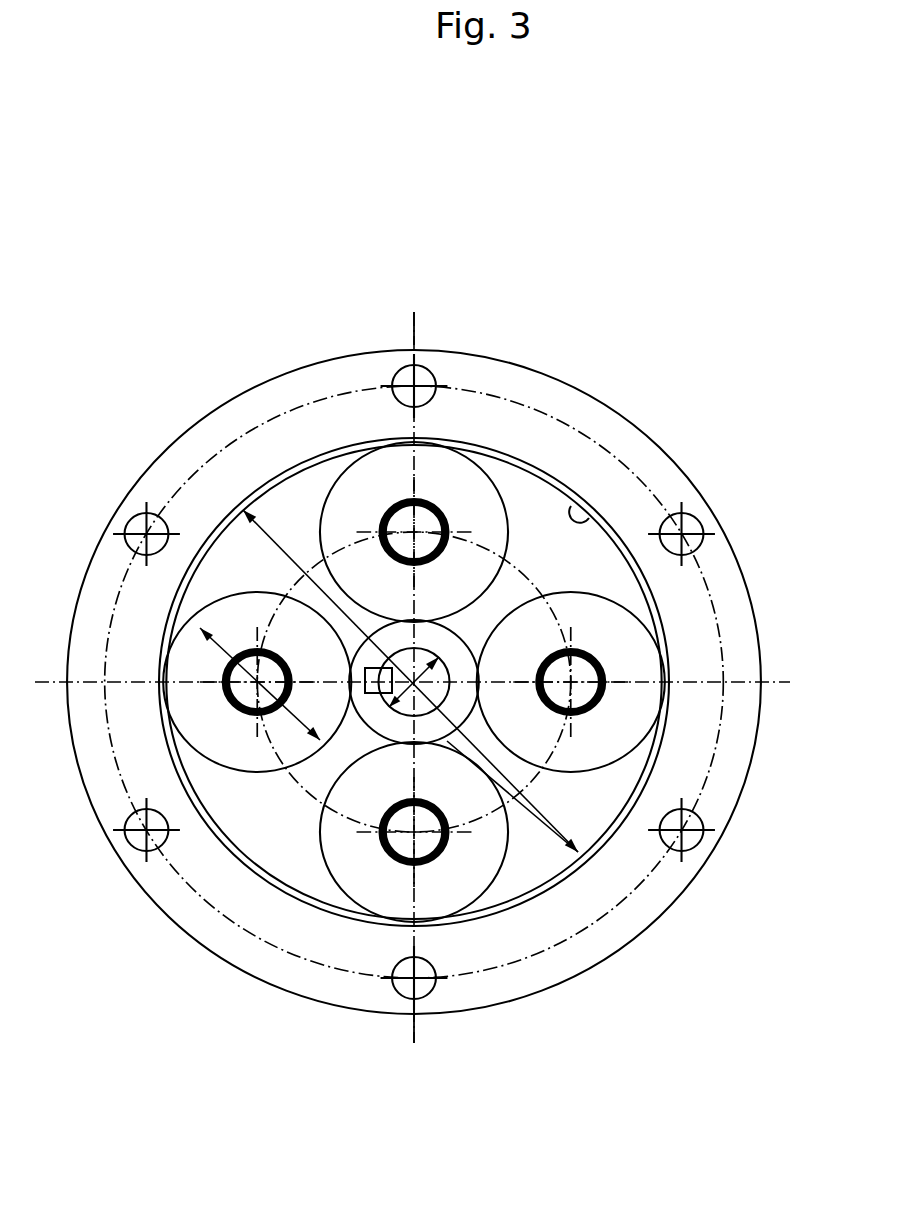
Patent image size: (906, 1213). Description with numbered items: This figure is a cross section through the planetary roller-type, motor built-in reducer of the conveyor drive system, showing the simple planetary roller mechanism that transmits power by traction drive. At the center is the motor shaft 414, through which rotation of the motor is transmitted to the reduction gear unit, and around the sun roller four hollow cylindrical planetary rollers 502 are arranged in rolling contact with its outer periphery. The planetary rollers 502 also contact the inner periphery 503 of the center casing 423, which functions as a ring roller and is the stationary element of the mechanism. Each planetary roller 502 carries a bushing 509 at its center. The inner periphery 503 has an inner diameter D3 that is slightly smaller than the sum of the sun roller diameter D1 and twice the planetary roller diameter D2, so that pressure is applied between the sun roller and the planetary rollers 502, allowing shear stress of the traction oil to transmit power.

The center casing 423 is at (603, 428).
The inner periphery 503 is at (583, 506).
The planetary rollers 502 is at (473, 478).
The bushings 509 is at (395, 516).
The motor shaft 414 is at (446, 700).
The diameter of the sun roller D1 is at (440, 657).
The diameter of the planetary rollers D2 is at (200, 629).
The inner diameter of the ring roller D3 is at (578, 853).